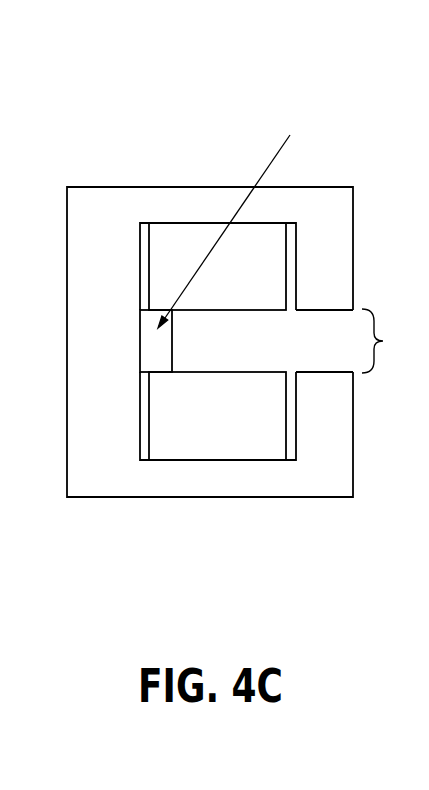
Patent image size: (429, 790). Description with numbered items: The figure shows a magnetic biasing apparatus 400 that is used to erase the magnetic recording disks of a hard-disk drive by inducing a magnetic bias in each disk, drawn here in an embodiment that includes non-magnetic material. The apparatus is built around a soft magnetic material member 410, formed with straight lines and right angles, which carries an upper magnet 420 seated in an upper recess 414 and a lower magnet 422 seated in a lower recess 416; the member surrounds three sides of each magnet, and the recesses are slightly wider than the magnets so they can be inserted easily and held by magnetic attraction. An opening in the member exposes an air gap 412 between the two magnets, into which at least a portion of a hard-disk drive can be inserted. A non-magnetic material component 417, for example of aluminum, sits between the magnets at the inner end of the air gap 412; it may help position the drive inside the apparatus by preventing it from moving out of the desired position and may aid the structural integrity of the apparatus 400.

The magnetic biasing apparatus 400 is at (105, 145).
The soft magnetic material member 410 is at (232, 187).
The air gap 412 is at (390, 341).
The upper recess 414 is at (140, 277).
The lower recess 416 is at (145, 427).
The non-magnetic material component 417 is at (145, 348).
The upper magnet 420 is at (258, 272).
The lower magnet 422 is at (232, 427).